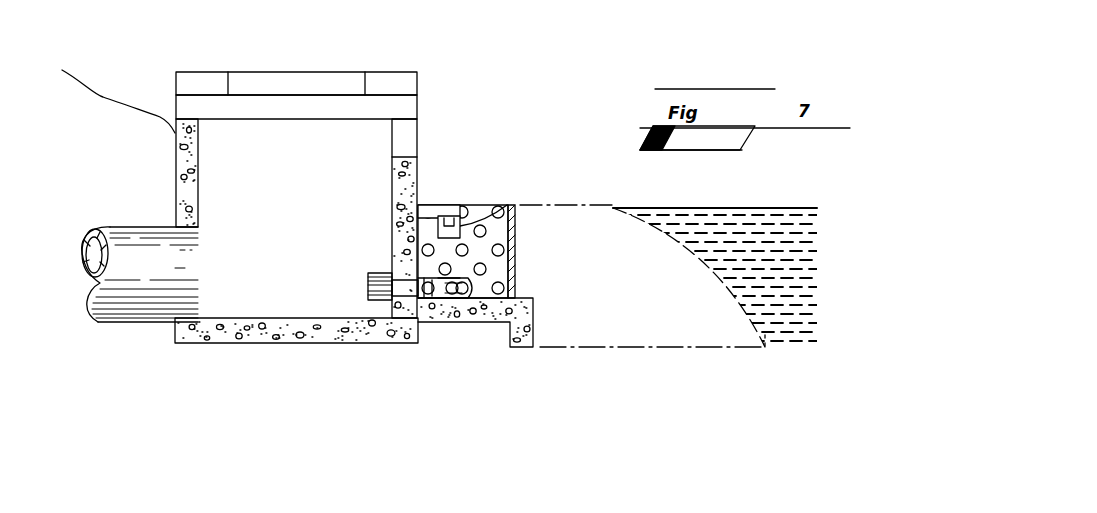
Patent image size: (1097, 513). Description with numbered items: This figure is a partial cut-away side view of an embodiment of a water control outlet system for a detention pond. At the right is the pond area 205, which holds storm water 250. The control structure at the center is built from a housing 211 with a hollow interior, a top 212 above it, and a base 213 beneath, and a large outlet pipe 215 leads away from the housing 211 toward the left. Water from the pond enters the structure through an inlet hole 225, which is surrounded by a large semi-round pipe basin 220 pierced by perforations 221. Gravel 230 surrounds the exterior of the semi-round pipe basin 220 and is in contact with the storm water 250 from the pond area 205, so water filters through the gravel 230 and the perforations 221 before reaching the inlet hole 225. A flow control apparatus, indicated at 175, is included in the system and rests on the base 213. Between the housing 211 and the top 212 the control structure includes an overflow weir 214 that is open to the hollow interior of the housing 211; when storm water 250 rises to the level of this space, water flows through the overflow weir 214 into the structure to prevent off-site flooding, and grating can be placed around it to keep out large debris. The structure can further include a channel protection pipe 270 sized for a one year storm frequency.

The injector 175 is at (540, 288).
The pond area 205 is at (795, 362).
The housing 211 is at (175, 204).
The top 212 is at (209, 83).
The base 213 is at (461, 323).
The overflow weir 214 is at (177, 108).
The large outlet pipe 215 is at (120, 323).
The large semi-round pipe basin 220 is at (428, 207).
The perforations 221 is at (458, 208).
The inlet hole 225 is at (406, 298).
The gravel 230 is at (647, 296).
The storm water 250 is at (718, 208).
The channel protection pipe 270 is at (508, 205).